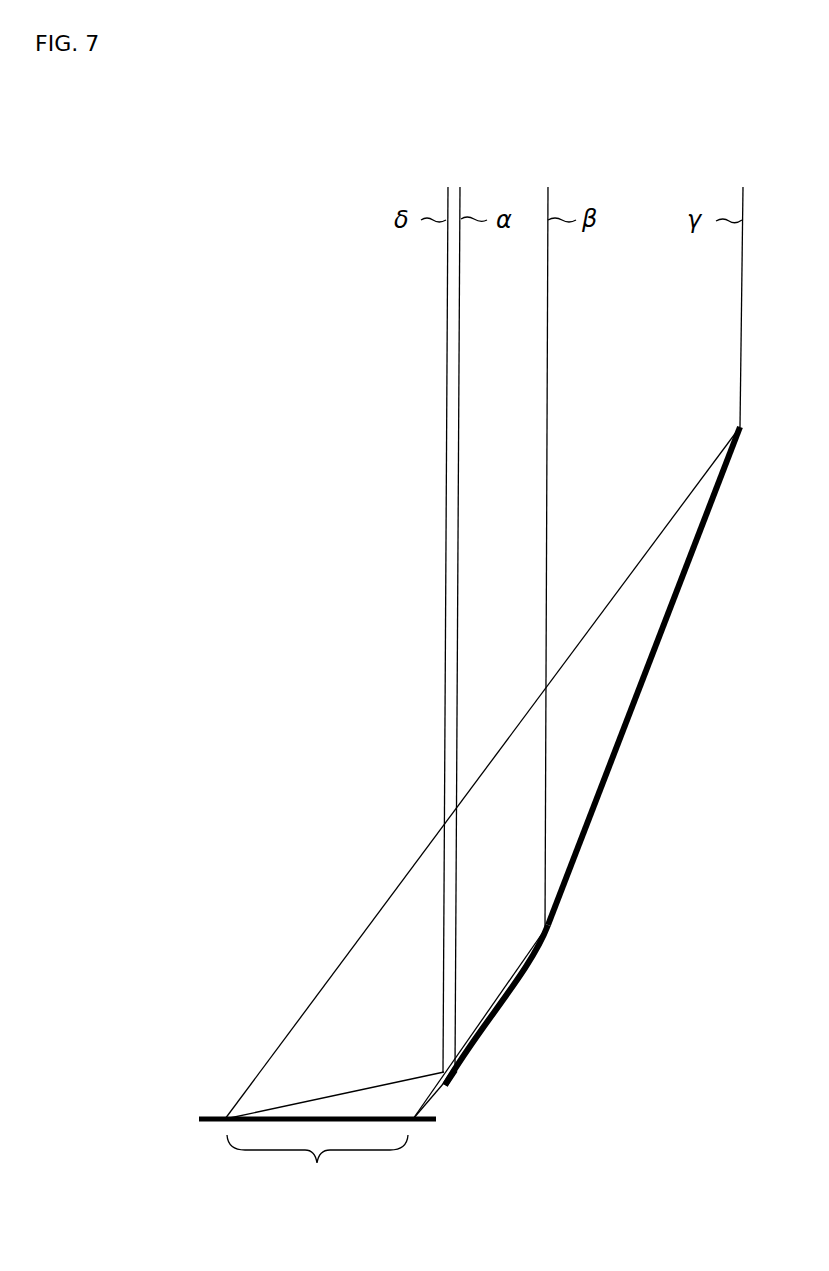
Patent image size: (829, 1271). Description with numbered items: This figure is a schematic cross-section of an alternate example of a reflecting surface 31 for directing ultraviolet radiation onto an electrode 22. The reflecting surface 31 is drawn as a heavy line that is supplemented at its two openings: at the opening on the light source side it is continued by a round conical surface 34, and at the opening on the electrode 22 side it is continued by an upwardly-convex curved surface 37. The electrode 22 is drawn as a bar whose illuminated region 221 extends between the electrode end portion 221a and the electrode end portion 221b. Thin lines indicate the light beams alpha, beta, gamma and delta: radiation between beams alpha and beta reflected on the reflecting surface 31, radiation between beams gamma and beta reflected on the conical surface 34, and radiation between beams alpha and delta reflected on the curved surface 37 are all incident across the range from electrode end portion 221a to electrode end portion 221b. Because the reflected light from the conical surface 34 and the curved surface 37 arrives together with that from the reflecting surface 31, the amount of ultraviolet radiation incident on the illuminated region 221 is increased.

The electrode 22 is at (199, 1119).
The illuminated region 221 is at (317, 1170).
The electrode end portion 221a is at (224, 1116).
The electrode end portion 221b is at (414, 1121).
The reflecting surface 31 is at (555, 943).
The round conical surface 34 is at (753, 435).
The upwardly-convex surface 37 is at (473, 1083).